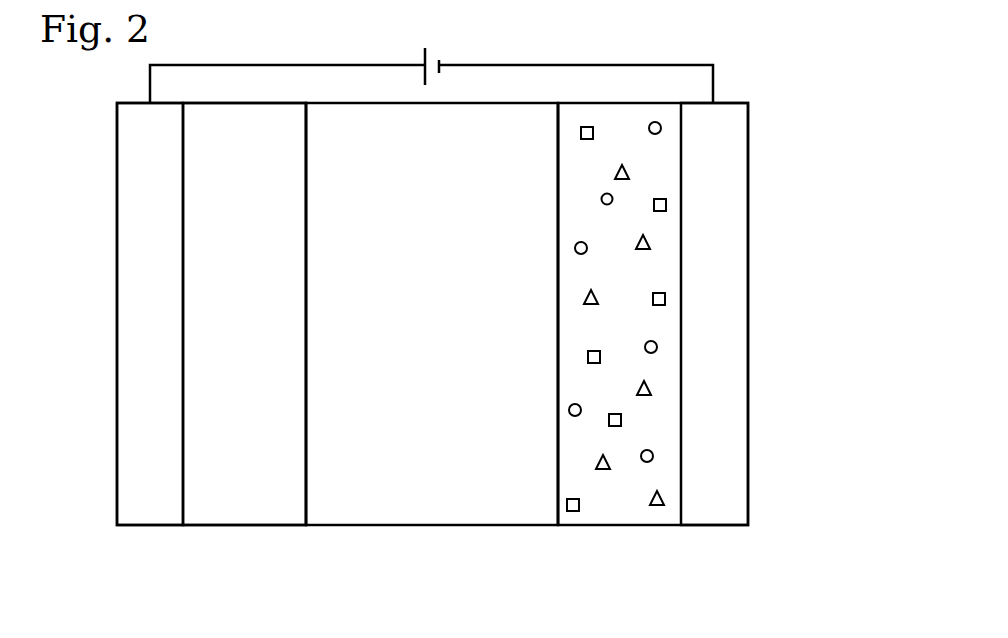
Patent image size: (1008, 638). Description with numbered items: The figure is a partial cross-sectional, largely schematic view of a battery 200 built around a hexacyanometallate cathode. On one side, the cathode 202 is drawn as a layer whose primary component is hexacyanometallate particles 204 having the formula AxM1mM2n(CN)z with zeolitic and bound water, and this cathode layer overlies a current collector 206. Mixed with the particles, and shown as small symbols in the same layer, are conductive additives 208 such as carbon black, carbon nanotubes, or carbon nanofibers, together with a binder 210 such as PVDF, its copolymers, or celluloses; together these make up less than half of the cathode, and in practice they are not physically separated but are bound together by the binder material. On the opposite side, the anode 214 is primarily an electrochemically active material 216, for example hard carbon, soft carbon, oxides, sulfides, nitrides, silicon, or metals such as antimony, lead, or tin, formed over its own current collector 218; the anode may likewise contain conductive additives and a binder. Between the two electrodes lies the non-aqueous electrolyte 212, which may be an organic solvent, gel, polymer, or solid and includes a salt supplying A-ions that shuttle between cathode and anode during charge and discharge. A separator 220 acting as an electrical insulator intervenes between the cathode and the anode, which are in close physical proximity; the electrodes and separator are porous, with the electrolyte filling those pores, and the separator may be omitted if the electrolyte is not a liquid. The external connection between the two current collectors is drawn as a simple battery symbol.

The battery 200 is at (643, 52).
The cathode 202 is at (797, 108).
The hexacyanometallate particles 204 is at (572, 512).
The current collector 206 is at (738, 348).
The conductive additives 208 is at (598, 458).
The binder 210 is at (602, 195).
The non-aqueous electrolyte 212 is at (453, 354).
The anode 214 is at (87, 133).
The electrochemically active material 216 is at (238, 505).
The current collector 218 is at (158, 512).
The separator 220 is at (455, 103).